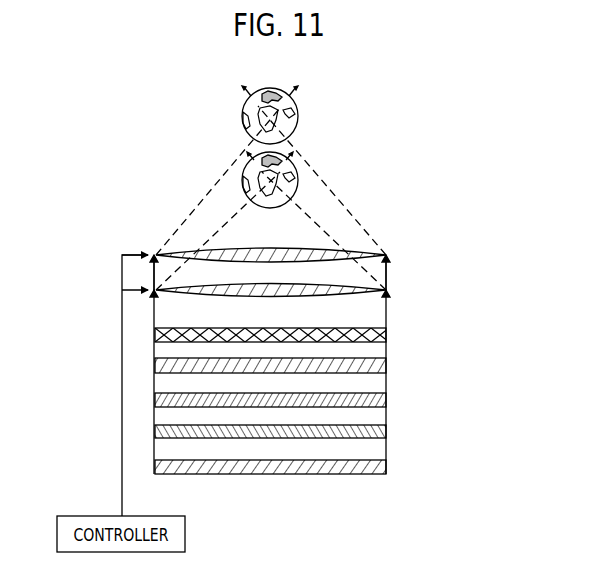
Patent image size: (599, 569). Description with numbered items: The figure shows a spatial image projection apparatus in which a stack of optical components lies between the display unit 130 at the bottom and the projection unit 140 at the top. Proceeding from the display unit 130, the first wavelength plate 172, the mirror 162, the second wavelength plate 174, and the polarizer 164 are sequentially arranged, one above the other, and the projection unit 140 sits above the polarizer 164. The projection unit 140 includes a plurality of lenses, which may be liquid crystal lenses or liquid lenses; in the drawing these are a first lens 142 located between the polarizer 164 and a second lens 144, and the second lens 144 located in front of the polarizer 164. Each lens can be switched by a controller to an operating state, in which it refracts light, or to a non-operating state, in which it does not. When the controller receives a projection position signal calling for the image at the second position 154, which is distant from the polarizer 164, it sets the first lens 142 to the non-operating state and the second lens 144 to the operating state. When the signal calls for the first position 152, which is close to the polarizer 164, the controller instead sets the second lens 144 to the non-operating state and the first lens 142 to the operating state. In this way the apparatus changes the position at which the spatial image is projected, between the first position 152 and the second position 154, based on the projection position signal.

The display unit 130 is at (388, 468).
The projection unit 140 is at (312, 275).
The first lens 142 is at (294, 291).
The second lens 144 is at (388, 255).
The first position 152 is at (299, 168).
The second position 154 is at (299, 112).
The mirror 162 is at (388, 400).
The polarizer 164 is at (388, 335).
The first wavelength plate 172 is at (388, 431).
The second wavelength plate 174 is at (388, 366).